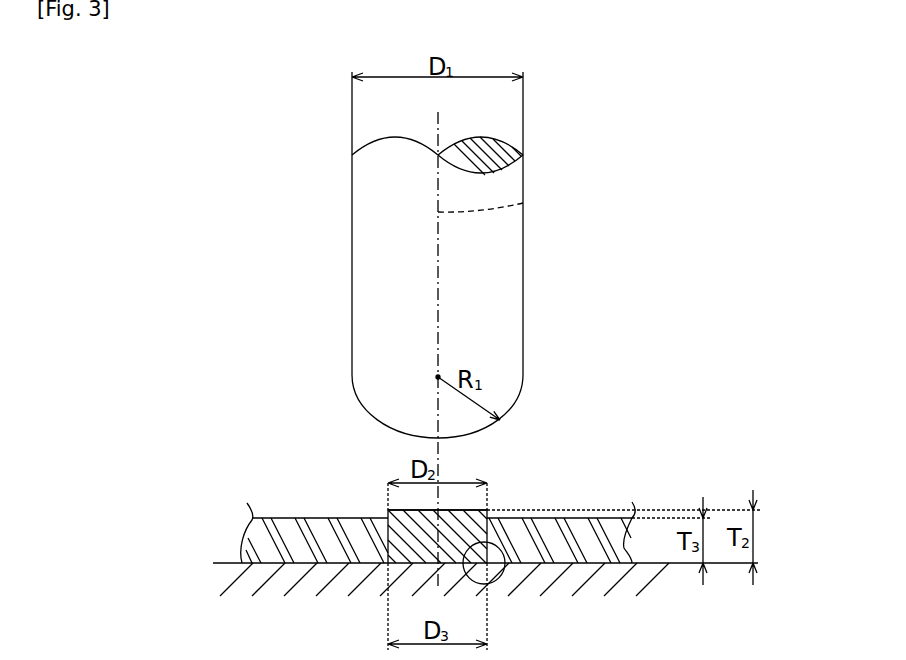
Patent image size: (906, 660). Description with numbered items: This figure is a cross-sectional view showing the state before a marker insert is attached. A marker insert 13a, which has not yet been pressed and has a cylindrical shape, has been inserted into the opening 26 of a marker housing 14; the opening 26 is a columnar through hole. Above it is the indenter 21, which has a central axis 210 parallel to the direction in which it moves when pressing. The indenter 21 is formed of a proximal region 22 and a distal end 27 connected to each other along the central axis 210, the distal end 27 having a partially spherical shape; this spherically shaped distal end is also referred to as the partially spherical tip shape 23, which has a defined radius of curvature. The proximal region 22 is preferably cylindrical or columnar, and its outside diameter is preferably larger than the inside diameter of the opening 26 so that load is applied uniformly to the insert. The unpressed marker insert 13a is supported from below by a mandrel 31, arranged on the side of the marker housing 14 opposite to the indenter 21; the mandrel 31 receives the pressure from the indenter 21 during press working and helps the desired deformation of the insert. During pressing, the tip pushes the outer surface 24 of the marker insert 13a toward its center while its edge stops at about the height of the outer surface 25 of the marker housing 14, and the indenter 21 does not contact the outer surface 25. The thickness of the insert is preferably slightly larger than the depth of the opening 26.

The indenter 21 is at (342, 231).
The central axis 210 is at (523, 203).
The proximal region 22 is at (510, 310).
The partially spherical tip shape 23 is at (362, 410).
The distal end 27 is at (366, 406).
The marker housing 14 is at (423, 493).
The outer surface of the marker housing 25 is at (348, 518).
The outer surface of the marker insert 24 is at (480, 488).
The marker insert which has not been pressed yet 13a is at (474, 514).
The opening 26 is at (488, 583).
The mandrel 31 is at (233, 563).